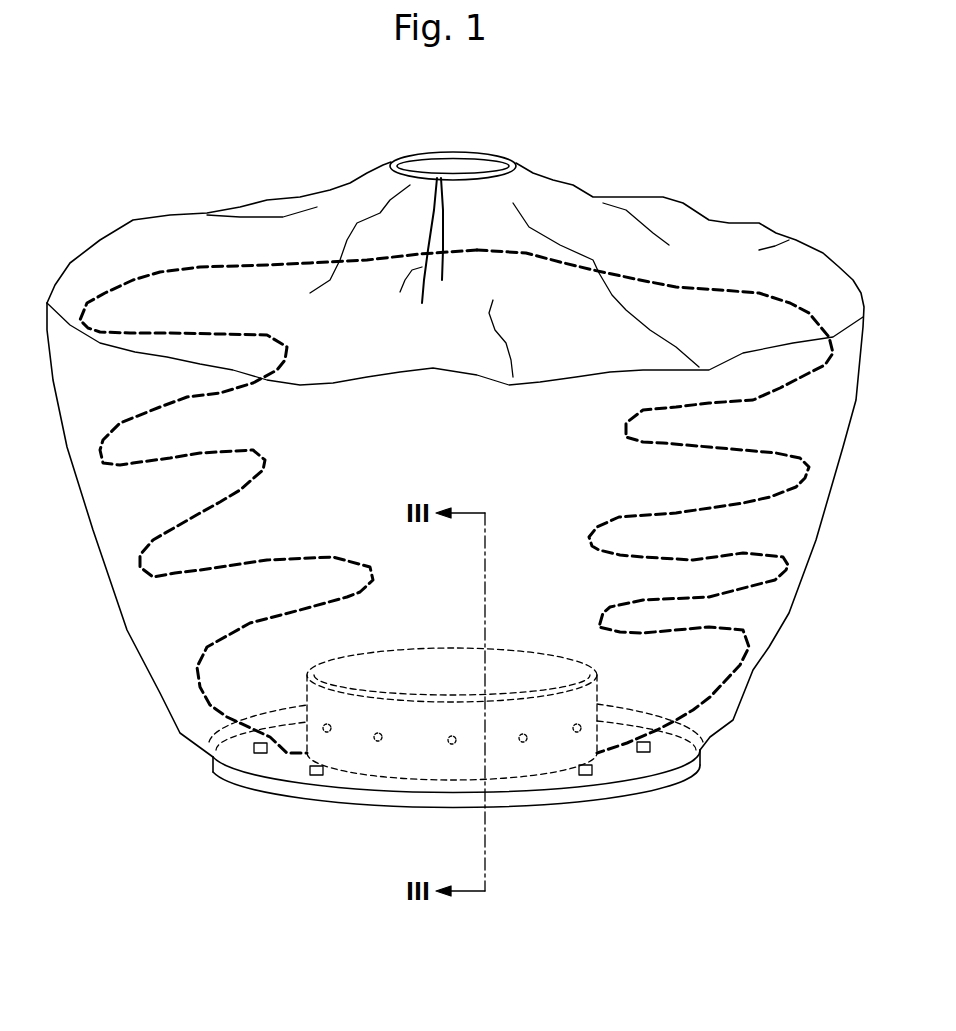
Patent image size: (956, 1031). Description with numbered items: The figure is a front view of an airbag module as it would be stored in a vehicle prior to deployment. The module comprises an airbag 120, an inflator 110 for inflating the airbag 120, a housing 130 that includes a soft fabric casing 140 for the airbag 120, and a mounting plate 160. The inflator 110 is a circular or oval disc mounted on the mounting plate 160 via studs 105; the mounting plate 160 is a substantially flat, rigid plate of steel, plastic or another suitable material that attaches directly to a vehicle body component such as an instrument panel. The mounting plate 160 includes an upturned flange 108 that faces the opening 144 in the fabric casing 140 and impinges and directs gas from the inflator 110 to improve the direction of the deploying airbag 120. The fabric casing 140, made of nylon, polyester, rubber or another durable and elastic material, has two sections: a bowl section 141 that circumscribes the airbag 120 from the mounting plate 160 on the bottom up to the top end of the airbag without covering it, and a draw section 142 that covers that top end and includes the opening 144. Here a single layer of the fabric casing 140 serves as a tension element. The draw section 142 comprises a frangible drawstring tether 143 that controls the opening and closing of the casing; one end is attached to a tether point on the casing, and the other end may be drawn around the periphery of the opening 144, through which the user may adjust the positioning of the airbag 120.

The studs 105 is at (254, 750).
The flange 108 is at (681, 733).
The inflator 110 is at (410, 660).
The airbag 120 is at (789, 563).
The housing 130 is at (799, 232).
The fabric casing 140 is at (706, 158).
The bowl section 141 is at (113, 635).
The draw section 142 is at (110, 213).
The drawstring tether 143 is at (420, 282).
The opening 144 is at (444, 140).
The mounting plate 160 is at (510, 802).